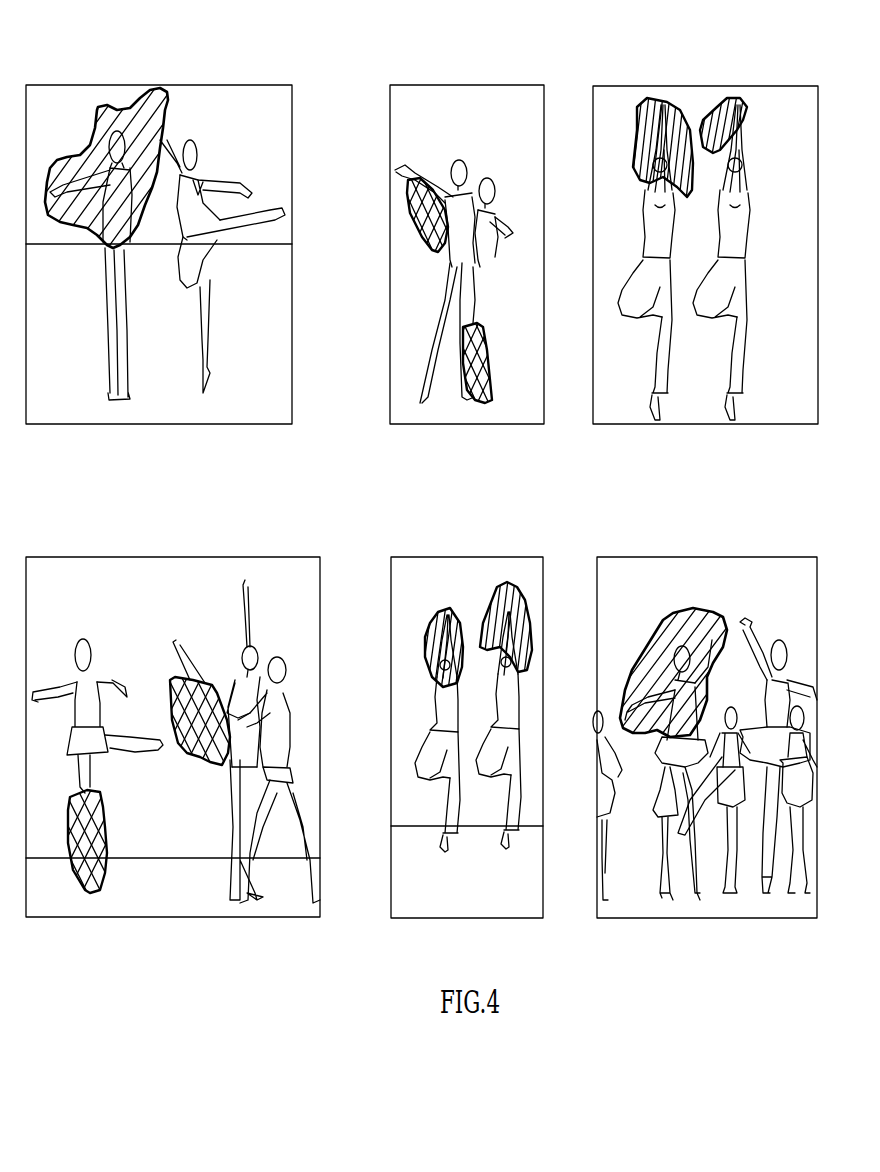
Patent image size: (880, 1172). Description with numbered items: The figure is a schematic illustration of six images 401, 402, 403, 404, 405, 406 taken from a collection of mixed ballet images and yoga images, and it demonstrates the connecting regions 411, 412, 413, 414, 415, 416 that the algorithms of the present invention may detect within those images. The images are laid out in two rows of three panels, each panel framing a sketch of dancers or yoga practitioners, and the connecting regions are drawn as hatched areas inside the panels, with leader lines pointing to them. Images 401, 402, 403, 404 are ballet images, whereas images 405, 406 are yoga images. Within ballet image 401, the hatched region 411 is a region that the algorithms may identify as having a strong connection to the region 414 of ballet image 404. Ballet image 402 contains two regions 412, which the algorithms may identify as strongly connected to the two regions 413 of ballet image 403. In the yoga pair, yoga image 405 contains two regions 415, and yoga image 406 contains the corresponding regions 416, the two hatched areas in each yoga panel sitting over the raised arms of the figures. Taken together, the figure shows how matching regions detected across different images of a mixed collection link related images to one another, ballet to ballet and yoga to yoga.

The ballet image 401 is at (78, 85).
The ballet image 402 is at (440, 85).
The ballet image 403 is at (78, 557).
The ballet image 404 is at (648, 555).
The yoga image 405 is at (647, 85).
The yoga image 406 is at (443, 555).
The connecting region 411 is at (168, 118).
The connecting regions 412 is at (440, 310).
The connecting regions 413 is at (182, 765).
The connecting region 414 is at (705, 603).
The connecting regions 415 is at (720, 90).
The connecting regions 416 is at (458, 610).